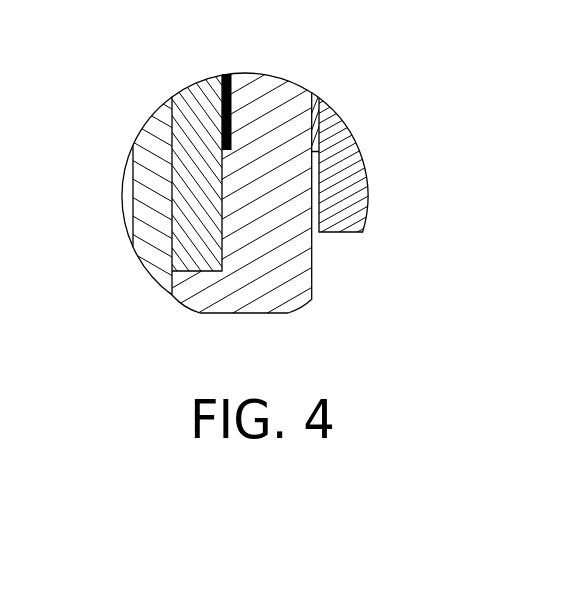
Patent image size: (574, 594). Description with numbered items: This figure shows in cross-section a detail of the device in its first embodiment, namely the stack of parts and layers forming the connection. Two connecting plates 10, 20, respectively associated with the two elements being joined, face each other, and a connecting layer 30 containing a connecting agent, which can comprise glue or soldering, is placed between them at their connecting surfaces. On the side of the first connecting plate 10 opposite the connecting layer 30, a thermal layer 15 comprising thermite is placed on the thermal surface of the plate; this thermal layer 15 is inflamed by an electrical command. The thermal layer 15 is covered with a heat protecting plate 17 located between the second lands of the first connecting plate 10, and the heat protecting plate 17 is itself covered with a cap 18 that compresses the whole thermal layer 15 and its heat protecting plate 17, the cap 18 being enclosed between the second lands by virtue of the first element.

The connecting plate 10 is at (263, 280).
The thermal layer 15 is at (222, 78).
The heat protecting plate 17 is at (190, 237).
The cap 18 is at (148, 148).
The connecting plate 20 is at (342, 203).
The connecting layer 30 is at (318, 108).